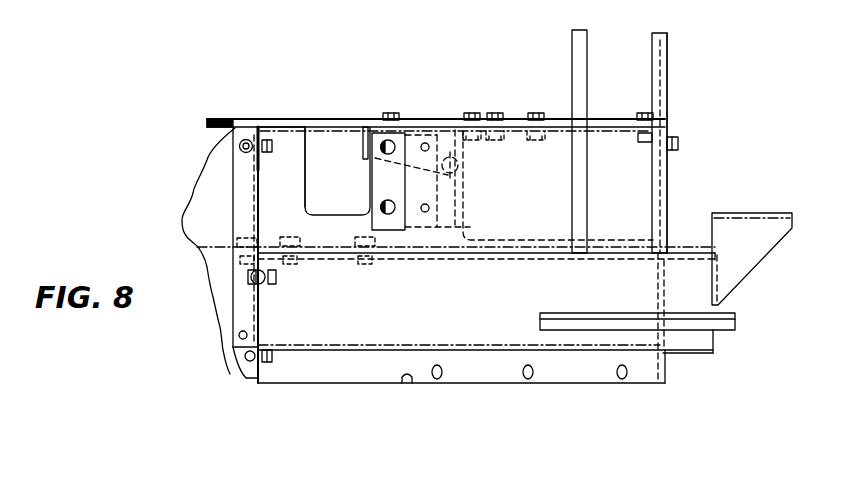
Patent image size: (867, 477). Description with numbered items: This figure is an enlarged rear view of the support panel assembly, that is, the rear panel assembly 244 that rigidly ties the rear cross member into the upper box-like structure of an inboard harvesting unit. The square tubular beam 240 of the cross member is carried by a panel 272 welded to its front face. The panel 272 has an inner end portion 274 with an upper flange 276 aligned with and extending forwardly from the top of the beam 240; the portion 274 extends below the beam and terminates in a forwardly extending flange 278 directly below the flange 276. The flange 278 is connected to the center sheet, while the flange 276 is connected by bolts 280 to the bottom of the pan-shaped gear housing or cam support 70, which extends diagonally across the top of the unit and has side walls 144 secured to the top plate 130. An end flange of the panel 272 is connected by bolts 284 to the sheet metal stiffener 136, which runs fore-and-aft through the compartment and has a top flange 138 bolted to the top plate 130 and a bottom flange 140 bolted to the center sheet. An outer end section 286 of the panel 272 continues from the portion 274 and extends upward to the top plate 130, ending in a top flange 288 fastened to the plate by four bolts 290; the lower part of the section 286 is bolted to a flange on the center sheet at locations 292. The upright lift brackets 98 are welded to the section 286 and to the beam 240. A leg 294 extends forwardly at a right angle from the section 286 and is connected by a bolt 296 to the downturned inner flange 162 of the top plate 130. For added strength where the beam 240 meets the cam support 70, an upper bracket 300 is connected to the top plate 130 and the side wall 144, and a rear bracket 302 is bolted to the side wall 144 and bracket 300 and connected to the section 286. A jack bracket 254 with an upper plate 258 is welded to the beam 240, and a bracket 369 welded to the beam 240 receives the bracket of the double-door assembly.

The gear housing or cam support 70 is at (318, 176).
The upright brackets 98 is at (660, 32).
The top plate 130 is at (247, 119).
The sheet metal stiffener 136 is at (258, 199).
The top flange 138 is at (233, 128).
The bottom flange 140 is at (228, 352).
The side walls 144 is at (288, 132).
The downturned flange 162 is at (668, 135).
The square tubular beam 240 is at (683, 340).
The rear panel assembly 244 is at (489, 82).
The jack bracket 254 is at (770, 232).
The upper plate 258 is at (758, 213).
The panel 272 is at (665, 397).
The inner end portion 274 is at (385, 368).
The upper flange 276 is at (318, 255).
The forwardly extending flange 278 is at (337, 385).
The bolts 280 is at (362, 240).
The bolts 284 is at (263, 347).
The outer end section 286 is at (456, 222).
The top flange 288 is at (507, 135).
The bolts 290 is at (537, 115).
The locations 292 is at (527, 379).
The leg 294 is at (657, 215).
The bolt 296 is at (680, 144).
The upper bracket 300 is at (362, 140).
The rear bracket 302 is at (382, 182).
The bracket 369 is at (718, 322).